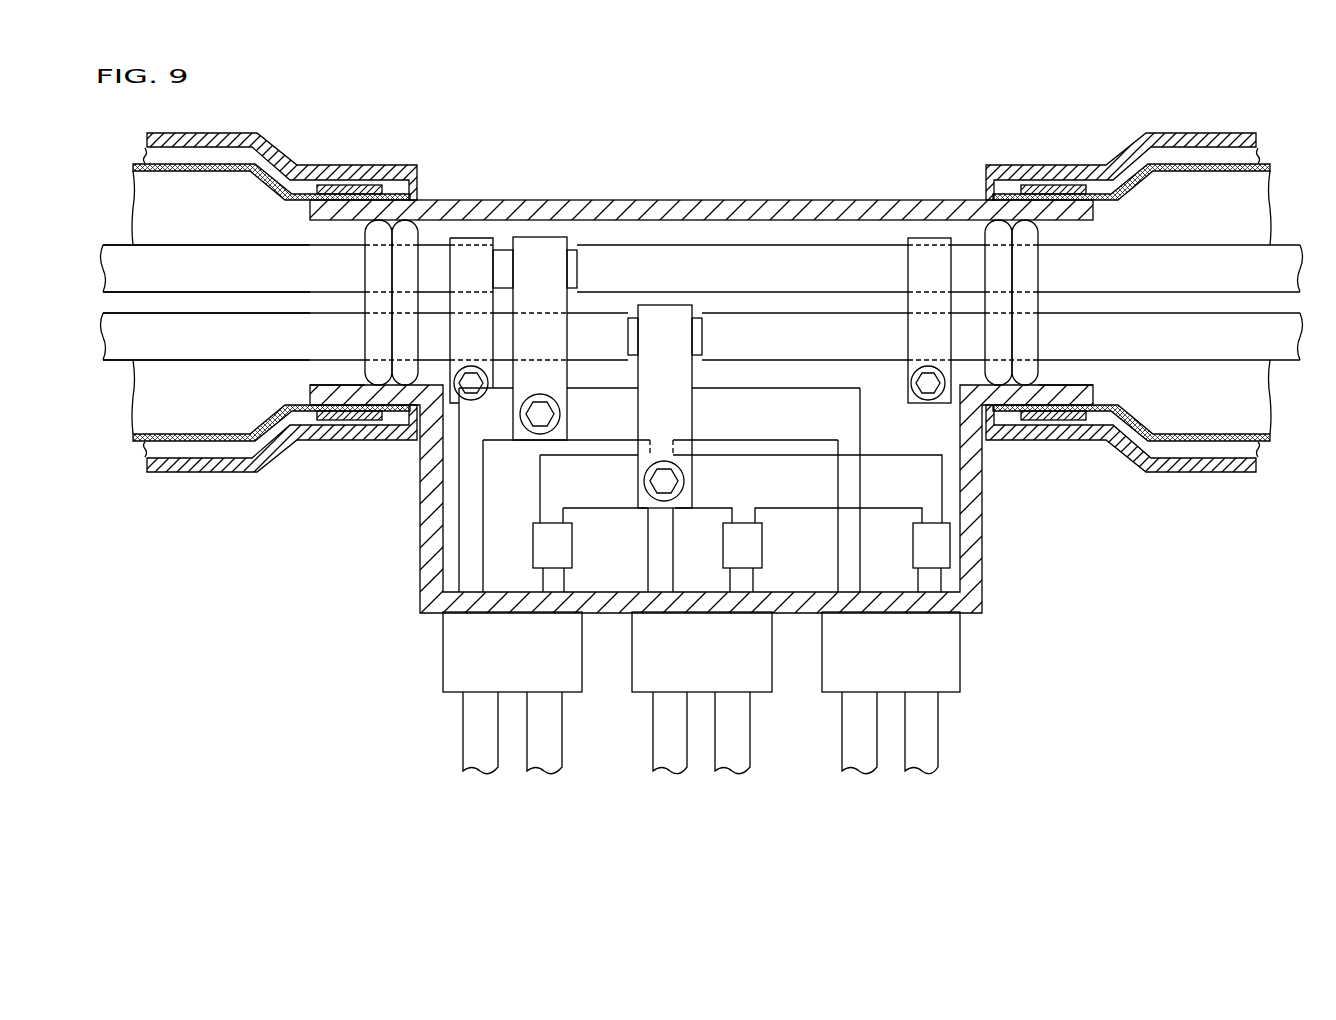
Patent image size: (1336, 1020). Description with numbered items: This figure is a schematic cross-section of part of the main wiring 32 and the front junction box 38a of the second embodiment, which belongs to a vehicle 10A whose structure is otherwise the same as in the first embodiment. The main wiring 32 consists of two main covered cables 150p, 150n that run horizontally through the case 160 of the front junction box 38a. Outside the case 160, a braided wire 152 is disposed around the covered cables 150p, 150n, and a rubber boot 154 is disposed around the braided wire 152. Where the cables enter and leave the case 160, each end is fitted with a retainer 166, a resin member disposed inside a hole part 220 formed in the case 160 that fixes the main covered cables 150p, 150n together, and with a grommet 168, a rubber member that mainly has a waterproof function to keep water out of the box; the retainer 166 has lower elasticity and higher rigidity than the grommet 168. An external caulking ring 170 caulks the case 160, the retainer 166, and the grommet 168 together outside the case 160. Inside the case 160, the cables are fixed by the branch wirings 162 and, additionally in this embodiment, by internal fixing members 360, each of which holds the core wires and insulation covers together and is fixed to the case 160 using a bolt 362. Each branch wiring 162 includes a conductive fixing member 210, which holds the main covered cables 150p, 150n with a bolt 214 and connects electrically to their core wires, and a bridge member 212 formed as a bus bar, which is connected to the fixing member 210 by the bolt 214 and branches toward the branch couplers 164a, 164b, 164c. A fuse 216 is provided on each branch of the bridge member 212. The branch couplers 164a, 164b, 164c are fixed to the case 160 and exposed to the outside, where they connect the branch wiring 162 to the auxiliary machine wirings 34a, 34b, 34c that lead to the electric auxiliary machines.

The vehicle 10A is at (445, 91).
The case 160 is at (866, 203).
The front junction box 38a is at (415, 558).
The rubber boot 154 is at (215, 132).
The braided wire 152 is at (200, 173).
The external caulking ring 170 is at (340, 184).
The retainer 166 is at (318, 236).
The grommet 168 is at (380, 271).
The main covered cable 150p is at (180, 280).
The main covered cable 150n is at (226, 350).
The main wiring 32 is at (147, 397).
The hole part 220 is at (333, 383).
The internal fixing member 360 is at (468, 243).
The bolt 362 is at (470, 372).
The branch wiring 162 is at (525, 153).
The fixing member 210 is at (547, 243).
The bridge member 212 is at (607, 400).
The bolt 214 is at (540, 403).
The fuse 216 is at (563, 548).
The branch coupler 164c is at (572, 686).
The branch coupler 164a is at (758, 686).
The branch coupler 164b is at (948, 686).
The auxiliary machine wiring 34c is at (458, 778).
The auxiliary machine wiring 34a is at (647, 778).
The auxiliary machine wiring 34b is at (837, 778).